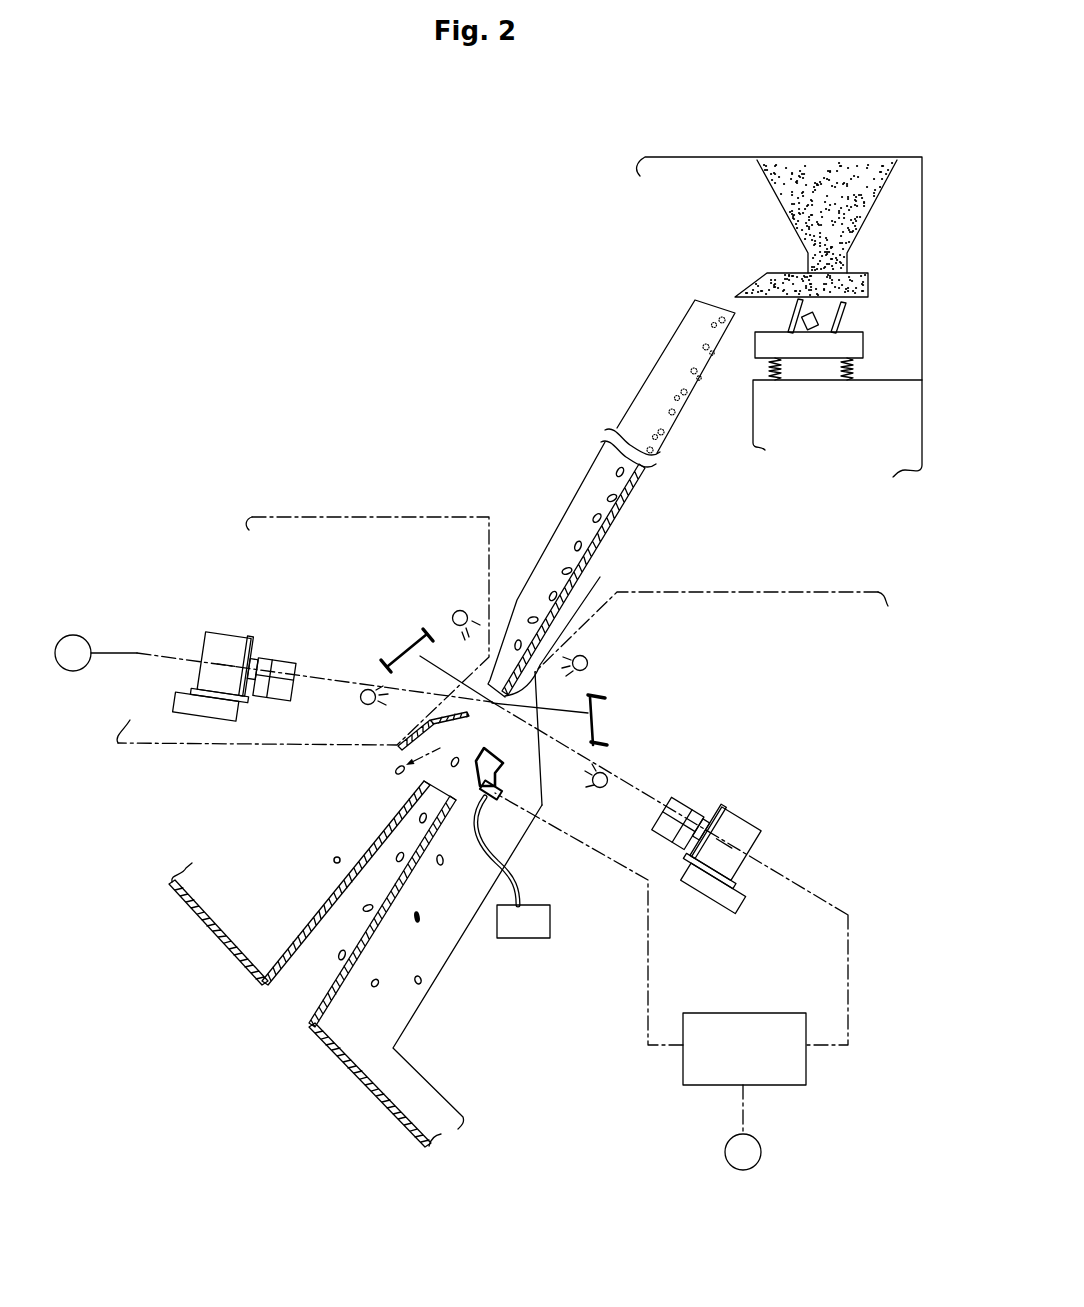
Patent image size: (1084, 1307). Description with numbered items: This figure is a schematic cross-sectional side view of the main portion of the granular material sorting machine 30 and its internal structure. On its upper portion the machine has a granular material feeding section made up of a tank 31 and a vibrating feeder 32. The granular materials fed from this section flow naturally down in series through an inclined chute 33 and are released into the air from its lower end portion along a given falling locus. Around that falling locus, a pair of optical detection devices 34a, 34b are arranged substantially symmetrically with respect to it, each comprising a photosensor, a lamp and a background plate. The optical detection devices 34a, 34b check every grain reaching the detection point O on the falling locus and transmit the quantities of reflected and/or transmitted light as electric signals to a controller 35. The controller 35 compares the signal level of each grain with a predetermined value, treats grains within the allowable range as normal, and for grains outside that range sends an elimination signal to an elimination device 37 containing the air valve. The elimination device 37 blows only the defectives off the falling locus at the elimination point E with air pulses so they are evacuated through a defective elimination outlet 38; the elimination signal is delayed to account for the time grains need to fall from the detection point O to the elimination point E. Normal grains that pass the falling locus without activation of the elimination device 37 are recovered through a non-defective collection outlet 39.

The granular material sorting machine 30 is at (427, 271).
The tank 31 is at (769, 190).
The vibrating feeder 32 is at (756, 272).
The inclined chute 33 is at (656, 358).
The optical detection device 34a is at (385, 517).
The optical detection device 34b is at (790, 592).
The controller 35 is at (806, 1084).
The elimination device 37 is at (548, 885).
The defective elimination outlet 38 is at (378, 1118).
The non-defective collection outlet 39 is at (285, 1005).
The detection point O is at (610, 565).
The elimination point E is at (460, 740).